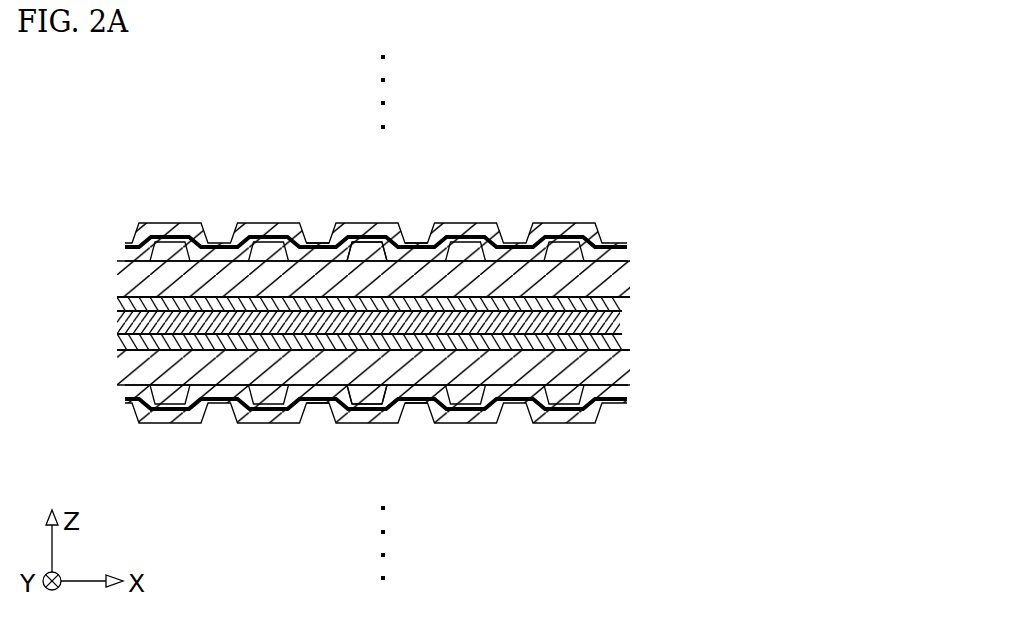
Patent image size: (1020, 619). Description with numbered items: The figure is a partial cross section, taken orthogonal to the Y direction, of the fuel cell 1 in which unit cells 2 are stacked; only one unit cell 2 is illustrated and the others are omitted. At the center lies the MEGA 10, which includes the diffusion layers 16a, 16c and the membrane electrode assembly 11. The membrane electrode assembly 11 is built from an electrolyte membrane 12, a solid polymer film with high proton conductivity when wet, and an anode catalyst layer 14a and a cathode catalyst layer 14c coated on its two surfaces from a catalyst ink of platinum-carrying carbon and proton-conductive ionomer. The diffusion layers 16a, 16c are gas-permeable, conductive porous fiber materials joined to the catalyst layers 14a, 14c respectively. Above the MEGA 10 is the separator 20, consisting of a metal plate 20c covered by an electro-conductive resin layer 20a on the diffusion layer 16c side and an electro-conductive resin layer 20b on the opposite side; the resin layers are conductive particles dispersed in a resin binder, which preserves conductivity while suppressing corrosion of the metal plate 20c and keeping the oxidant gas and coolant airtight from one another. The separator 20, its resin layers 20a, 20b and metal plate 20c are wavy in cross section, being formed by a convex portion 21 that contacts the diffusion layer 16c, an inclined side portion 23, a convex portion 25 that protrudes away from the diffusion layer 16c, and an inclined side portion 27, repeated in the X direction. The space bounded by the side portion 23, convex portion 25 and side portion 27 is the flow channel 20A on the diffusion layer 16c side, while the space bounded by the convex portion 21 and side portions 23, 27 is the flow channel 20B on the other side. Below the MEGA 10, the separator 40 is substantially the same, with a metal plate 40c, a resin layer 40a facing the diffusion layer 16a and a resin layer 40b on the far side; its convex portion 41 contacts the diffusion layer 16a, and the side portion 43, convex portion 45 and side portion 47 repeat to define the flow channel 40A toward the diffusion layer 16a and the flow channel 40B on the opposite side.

The fuel cell 1 is at (762, 152).
The unit cell 2 is at (660, 180).
The MEGA 10 is at (792, 258).
The membrane electrode assembly 11 is at (753, 288).
The electrolyte membrane 12 is at (620, 328).
The anode catalyst layer 14a is at (622, 347).
The cathode catalyst layer 14c is at (622, 310).
The diffusion layer 16a is at (604, 367).
The diffusion layer 16c is at (608, 288).
The separator 20 is at (612, 243).
The electro-conductive resin layer 20a is at (626, 262).
The electro-conductive resin layer 20b is at (627, 242).
The metal plate 20c is at (627, 247).
The flow channel 20A is at (383, 255).
The flow channel 20B is at (315, 240).
The convex portion 21 is at (313, 250).
The side portion 23 is at (347, 250).
The convex portion 25 is at (365, 248).
The side portion 27 is at (400, 248).
The separator 40 is at (612, 407).
The electro-conductive resin layer 40a is at (627, 388).
The electro-conductive resin layer 40b is at (626, 406).
The metal plate 40c is at (626, 403).
The flow channel 40A is at (370, 392).
The flow channel 40B is at (317, 410).
The convex portion 41 is at (313, 392).
The side portion 43 is at (342, 415).
The convex portion 45 is at (358, 415).
The side portion 47 is at (396, 405).